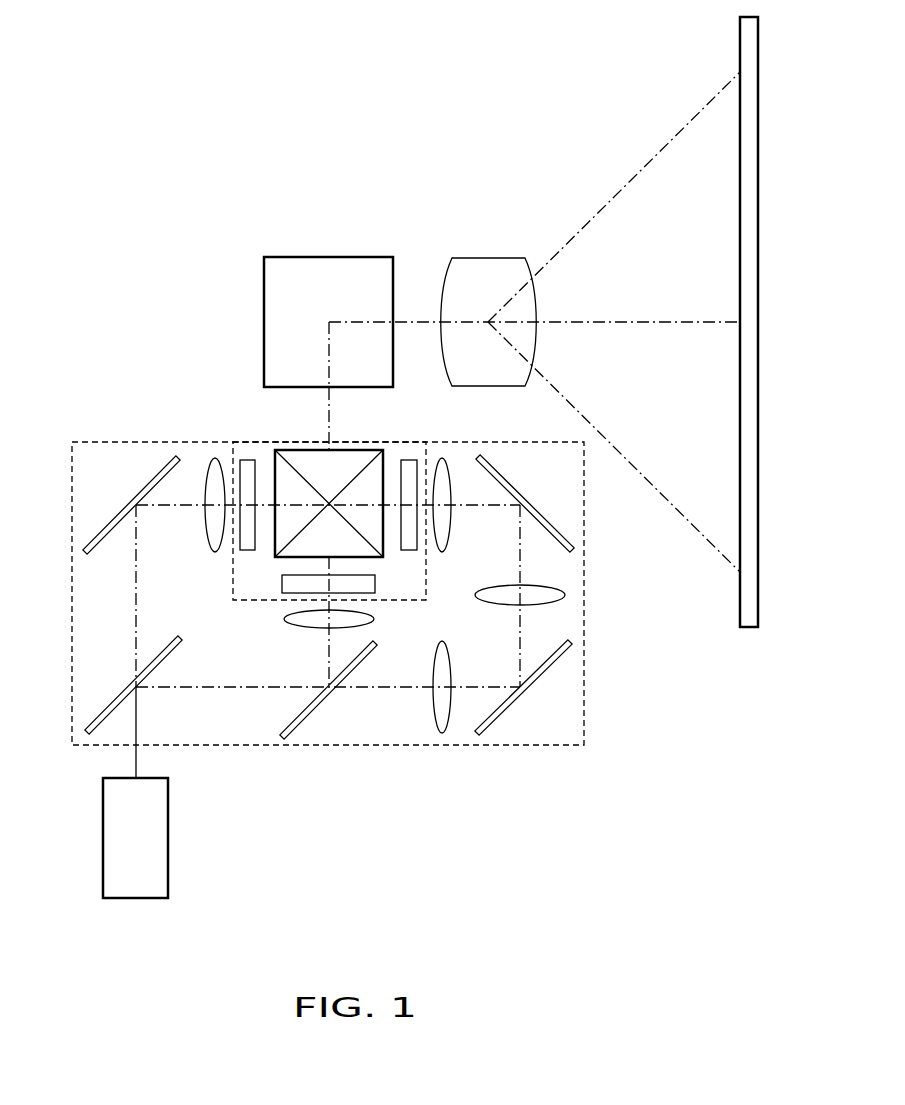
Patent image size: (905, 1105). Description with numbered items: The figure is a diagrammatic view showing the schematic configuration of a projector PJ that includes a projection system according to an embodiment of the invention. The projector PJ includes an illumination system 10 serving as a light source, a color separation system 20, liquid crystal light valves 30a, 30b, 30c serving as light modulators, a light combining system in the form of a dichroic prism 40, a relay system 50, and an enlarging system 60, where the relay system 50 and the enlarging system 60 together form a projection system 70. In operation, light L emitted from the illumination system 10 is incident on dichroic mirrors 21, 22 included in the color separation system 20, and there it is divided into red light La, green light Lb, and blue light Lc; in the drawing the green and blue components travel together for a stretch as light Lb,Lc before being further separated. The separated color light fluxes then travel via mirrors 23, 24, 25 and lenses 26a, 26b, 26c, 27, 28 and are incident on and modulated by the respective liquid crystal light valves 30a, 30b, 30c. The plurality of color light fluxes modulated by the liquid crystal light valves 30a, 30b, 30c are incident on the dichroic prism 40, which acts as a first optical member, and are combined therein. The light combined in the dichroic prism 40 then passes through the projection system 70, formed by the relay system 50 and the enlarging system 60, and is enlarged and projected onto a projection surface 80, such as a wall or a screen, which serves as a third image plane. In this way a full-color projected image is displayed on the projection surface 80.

The projector PJ is at (128, 132).
The illumination system 10 is at (168, 835).
The color separation system 20 is at (360, 745).
The dichroic mirror 21 is at (118, 701).
The dichroic mirror 22 is at (310, 742).
The mirror 23 is at (160, 472).
The mirror 24 is at (505, 722).
The mirror 25 is at (506, 484).
The lens 26a is at (215, 458).
The lens 26b is at (287, 614).
The lens 26c is at (445, 464).
The lens 27 is at (440, 730).
The lens 28 is at (565, 596).
The liquid crystal light valve 30a is at (248, 460).
The liquid crystal light valve 30b is at (282, 586).
The liquid crystal light valve 30c is at (410, 460).
The dichroic prism 40 is at (356, 450).
The relay system 50 is at (330, 257).
The enlarging system 60 is at (490, 257).
The projection system 70 is at (508, 194).
The projection surface 80 is at (740, 602).
The light L is at (130, 758).
The red light La is at (136, 612).
The green light Lb is at (329, 645).
The blue light Lc is at (387, 689).
The green light and blue light Lb,Lc is at (178, 687).